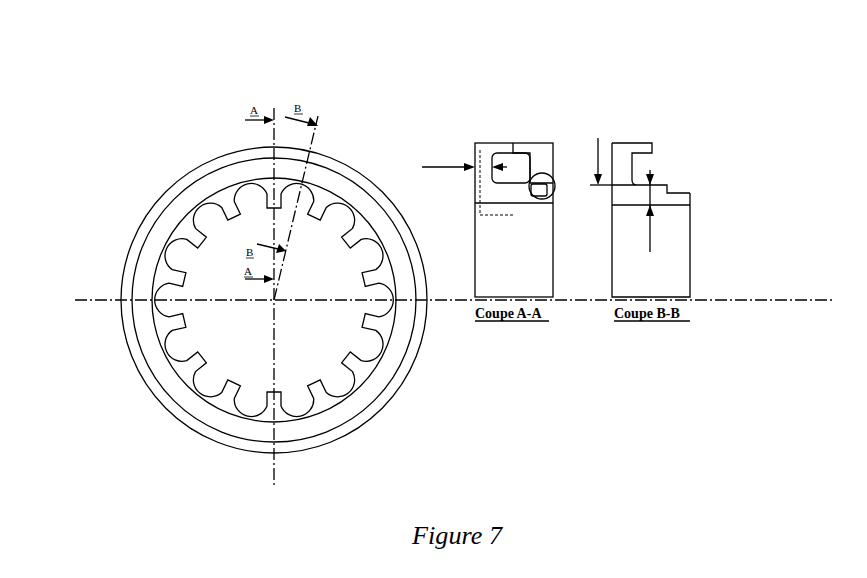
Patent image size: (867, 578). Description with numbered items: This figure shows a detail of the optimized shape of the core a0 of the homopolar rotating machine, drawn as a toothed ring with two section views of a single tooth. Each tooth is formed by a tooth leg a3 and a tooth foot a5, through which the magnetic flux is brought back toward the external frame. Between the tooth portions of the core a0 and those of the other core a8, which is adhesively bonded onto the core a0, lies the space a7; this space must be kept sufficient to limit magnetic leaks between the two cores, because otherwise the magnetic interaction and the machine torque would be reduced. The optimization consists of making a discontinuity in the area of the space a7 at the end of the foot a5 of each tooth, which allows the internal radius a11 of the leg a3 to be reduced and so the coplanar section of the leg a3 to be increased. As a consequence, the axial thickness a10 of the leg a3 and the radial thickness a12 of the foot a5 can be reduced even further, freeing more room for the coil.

The core a0 is at (175, 212).
The tooth leg a3 is at (168, 353).
The tooth foot a5 is at (178, 279).
The space a7 is at (530, 172).
The other core a8 is at (542, 148).
The axial thickness a10 is at (446, 167).
The internal radius a11 is at (598, 138).
The radial thickness a12 is at (650, 252).